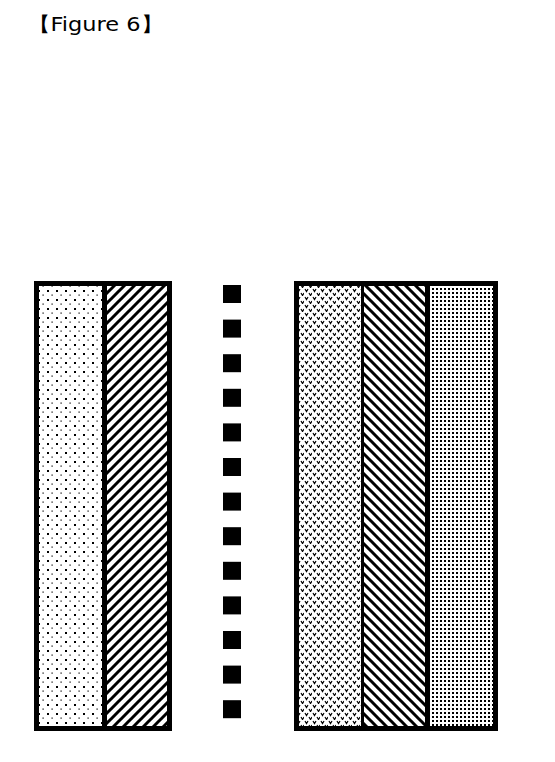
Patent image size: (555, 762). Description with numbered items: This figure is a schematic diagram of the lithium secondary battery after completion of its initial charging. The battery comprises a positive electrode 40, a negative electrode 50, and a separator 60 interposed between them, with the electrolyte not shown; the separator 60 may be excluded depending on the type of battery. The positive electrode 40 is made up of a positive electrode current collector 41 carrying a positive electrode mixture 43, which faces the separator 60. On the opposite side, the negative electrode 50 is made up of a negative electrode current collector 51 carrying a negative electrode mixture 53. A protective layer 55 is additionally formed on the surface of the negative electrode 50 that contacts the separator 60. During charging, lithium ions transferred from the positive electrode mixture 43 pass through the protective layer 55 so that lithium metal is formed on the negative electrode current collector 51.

The positive electrode 40 is at (80, 128).
The positive electrode current collector 41 is at (73, 283).
The positive electrode mixture 43 is at (138, 283).
The negative electrode 50 is at (330, 127).
The negative electrode current collector 51 is at (463, 283).
The negative electrode mixture 53 is at (400, 283).
The protective layer 55 is at (332, 283).
The separator 60 is at (237, 285).